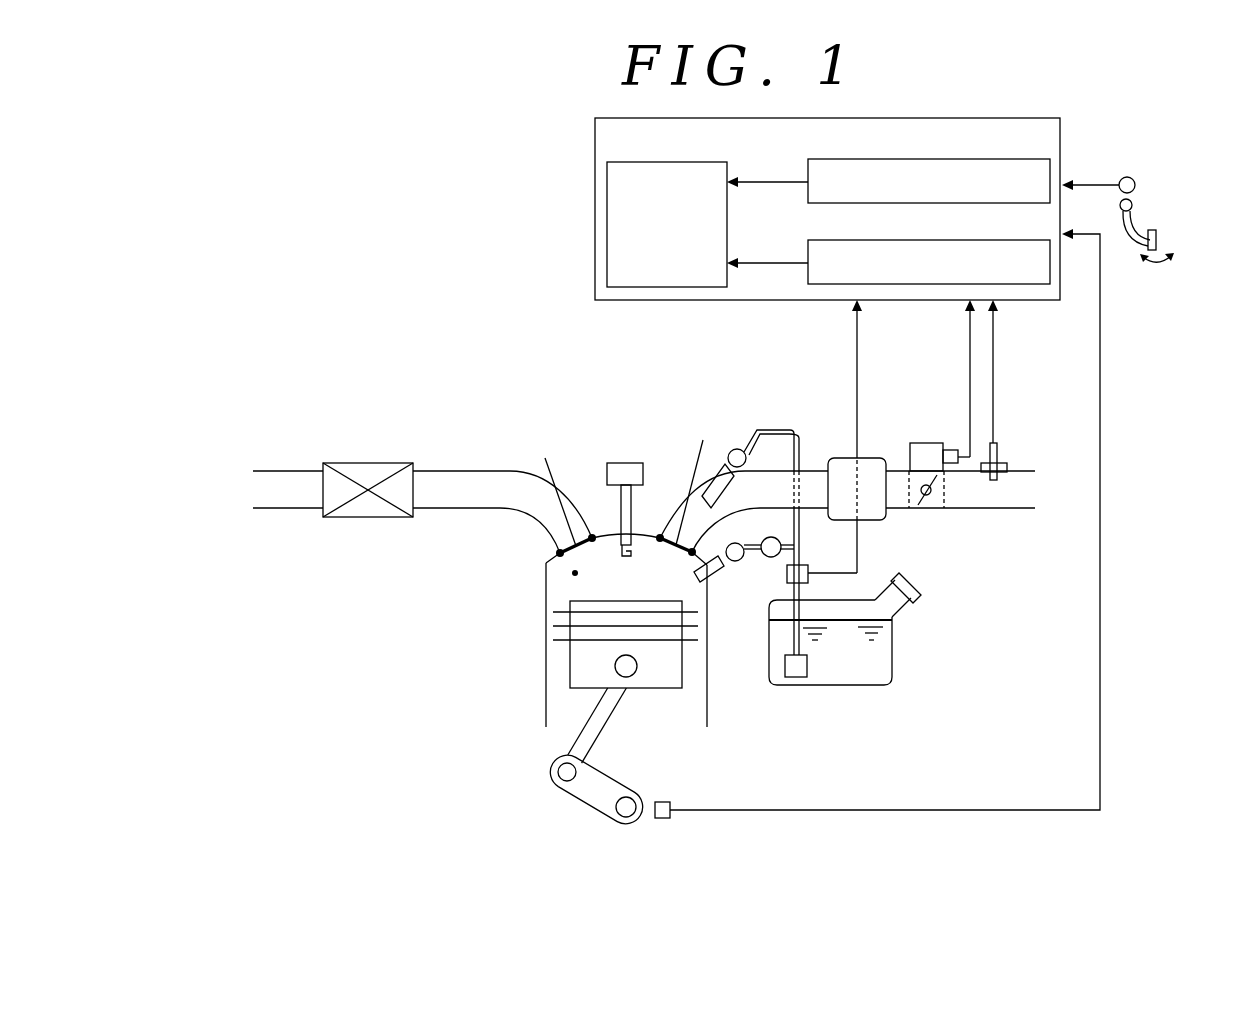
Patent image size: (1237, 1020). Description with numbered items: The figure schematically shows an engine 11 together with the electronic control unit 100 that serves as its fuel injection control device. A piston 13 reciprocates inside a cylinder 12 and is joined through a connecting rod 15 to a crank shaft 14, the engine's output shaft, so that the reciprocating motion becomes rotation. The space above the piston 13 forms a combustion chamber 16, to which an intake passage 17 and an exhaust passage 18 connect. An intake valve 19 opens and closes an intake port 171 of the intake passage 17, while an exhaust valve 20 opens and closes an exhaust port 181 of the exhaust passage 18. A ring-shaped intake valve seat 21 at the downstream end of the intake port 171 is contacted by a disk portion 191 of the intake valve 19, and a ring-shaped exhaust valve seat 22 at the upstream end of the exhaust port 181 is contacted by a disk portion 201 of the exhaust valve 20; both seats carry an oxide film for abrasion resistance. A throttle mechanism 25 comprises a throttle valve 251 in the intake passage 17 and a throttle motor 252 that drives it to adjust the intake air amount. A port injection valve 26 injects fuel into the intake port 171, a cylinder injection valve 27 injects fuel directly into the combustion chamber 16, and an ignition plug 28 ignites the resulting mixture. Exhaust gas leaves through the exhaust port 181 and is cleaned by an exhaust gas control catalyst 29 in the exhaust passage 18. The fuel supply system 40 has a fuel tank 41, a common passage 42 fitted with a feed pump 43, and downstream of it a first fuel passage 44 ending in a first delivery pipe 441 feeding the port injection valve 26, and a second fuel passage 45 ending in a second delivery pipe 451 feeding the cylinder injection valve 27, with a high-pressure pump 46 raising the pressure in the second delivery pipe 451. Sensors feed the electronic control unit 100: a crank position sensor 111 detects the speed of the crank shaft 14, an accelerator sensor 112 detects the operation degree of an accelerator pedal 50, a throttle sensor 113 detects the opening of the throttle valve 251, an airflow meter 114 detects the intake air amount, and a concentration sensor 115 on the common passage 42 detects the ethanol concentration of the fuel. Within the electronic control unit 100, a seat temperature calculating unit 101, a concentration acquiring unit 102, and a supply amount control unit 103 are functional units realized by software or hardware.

The engine 11 is at (398, 381).
The cylinder 12 is at (543, 617).
The piston 13 is at (588, 660).
The crank shaft 14 is at (623, 807).
The connecting rod 15 is at (595, 725).
The combustion chamber 16 is at (575, 573).
The intake passage 17 is at (1023, 497).
The exhaust passage 18 is at (266, 500).
The intake valve 19 is at (697, 470).
The exhaust valve 20 is at (560, 487).
The intake valve seat 21 is at (662, 537).
The exhaust valve seat 22 is at (558, 545).
The throttle mechanism 25 is at (985, 514).
The port injection valve 26 is at (722, 488).
The cylinder injection valve 27 is at (714, 549).
The ignition plug 28 is at (620, 518).
The exhaust gas control catalyst 29 is at (364, 468).
The fuel supply system 40 is at (855, 719).
The fuel tank 41 is at (893, 664).
The common passage 42 is at (801, 642).
The feed pump 43 is at (797, 678).
The first fuel passage 44 is at (766, 426).
The second fuel passage 45 is at (800, 530).
The high-pressure pump 46 is at (770, 558).
The accelerator pedal 50 is at (1158, 240).
The electronic control unit 100 is at (1032, 118).
The seat temperature calculating unit 101 is at (1006, 160).
The concentration acquiring unit 102 is at (1006, 241).
The supply amount control unit 103 is at (596, 184).
The crank position sensor 111 is at (665, 800).
The accelerator sensor 112 is at (1136, 186).
The throttle sensor 113 is at (952, 448).
The airflow meter 114 is at (1003, 461).
The concentration sensor 115 is at (809, 578).
The intake port 171 is at (660, 533).
The exhaust port 181 is at (497, 512).
The disk portion 191 is at (664, 550).
The disk portion 201 is at (596, 551).
The throttle valve 251 is at (930, 507).
The throttle motor 252 is at (943, 467).
The first delivery pipe 441 is at (737, 448).
The second delivery pipe 451 is at (737, 562).